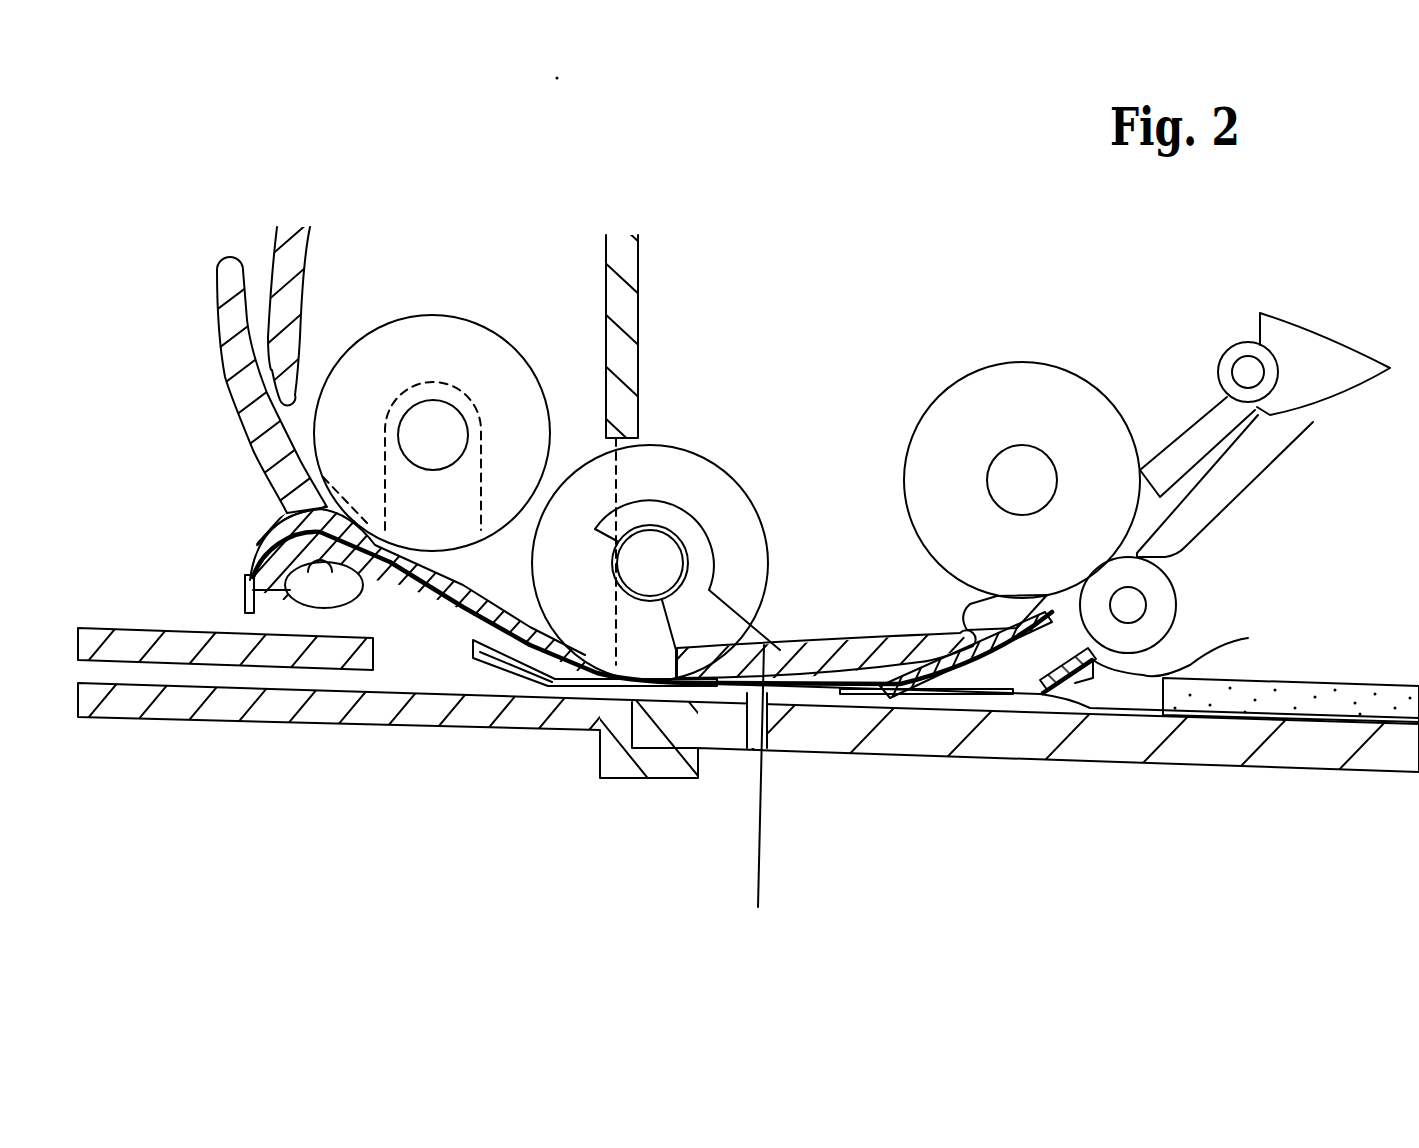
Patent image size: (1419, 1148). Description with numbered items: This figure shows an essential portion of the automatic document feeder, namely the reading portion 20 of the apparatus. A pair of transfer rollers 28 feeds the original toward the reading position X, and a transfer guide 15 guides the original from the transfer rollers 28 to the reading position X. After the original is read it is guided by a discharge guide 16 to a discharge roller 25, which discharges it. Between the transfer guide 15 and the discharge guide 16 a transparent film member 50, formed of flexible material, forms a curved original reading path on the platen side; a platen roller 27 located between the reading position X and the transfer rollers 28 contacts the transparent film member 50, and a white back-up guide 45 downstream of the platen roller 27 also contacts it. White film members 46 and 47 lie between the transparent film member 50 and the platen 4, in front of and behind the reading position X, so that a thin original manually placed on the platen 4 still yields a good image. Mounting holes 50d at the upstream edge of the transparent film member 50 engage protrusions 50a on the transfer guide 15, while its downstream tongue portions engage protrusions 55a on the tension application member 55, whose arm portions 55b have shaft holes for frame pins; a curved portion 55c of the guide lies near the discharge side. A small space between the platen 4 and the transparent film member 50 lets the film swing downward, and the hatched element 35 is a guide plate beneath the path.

The platen 4 is at (1233, 753).
The transfer guide 15 is at (432, 603).
The discharge guide 16 is at (983, 680).
The reading portion 20 is at (907, 203).
The discharge roller 25 is at (1013, 387).
The platen roller 27 is at (678, 478).
The pair of transfer rollers 28 is at (432, 347).
The guide plate 35 is at (897, 680).
The white back-up guide 45 is at (807, 663).
The white film member 46 is at (585, 687).
The white film member 47 is at (872, 697).
The transparent film member 50 is at (743, 697).
The protrusions 50a is at (245, 588).
The mounting holes 50d is at (252, 573).
The tension application member 55 is at (1045, 690).
The protrusions 55a is at (1077, 687).
The arm portions 55b is at (1050, 605).
The guide curved portion 55c is at (1265, 636).
The reading position X is at (760, 802).